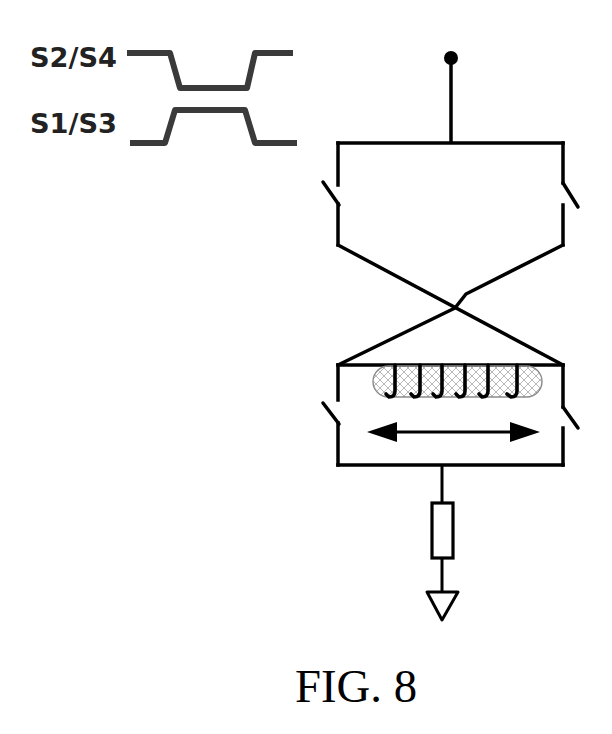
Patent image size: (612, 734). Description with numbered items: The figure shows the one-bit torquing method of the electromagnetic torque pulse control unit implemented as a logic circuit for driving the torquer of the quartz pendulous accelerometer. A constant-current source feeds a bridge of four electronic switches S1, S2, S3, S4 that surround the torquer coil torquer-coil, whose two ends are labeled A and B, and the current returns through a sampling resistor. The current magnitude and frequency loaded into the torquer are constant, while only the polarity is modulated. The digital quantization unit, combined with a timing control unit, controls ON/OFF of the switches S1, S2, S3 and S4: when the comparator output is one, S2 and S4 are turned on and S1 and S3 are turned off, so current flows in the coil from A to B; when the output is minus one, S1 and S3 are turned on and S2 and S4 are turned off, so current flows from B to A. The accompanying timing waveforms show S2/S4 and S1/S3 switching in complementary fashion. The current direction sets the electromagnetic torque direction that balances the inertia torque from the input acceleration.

The electronic switch S1 is at (352, 194).
The electronic switch S2 is at (552, 195).
The electronic switch S3 is at (347, 410).
The electronic switch S4 is at (555, 418).
The coil terminal A is at (441, 441).
The coil terminal B is at (525, 441).
The torquer coil torquer-coil is at (417, 363).